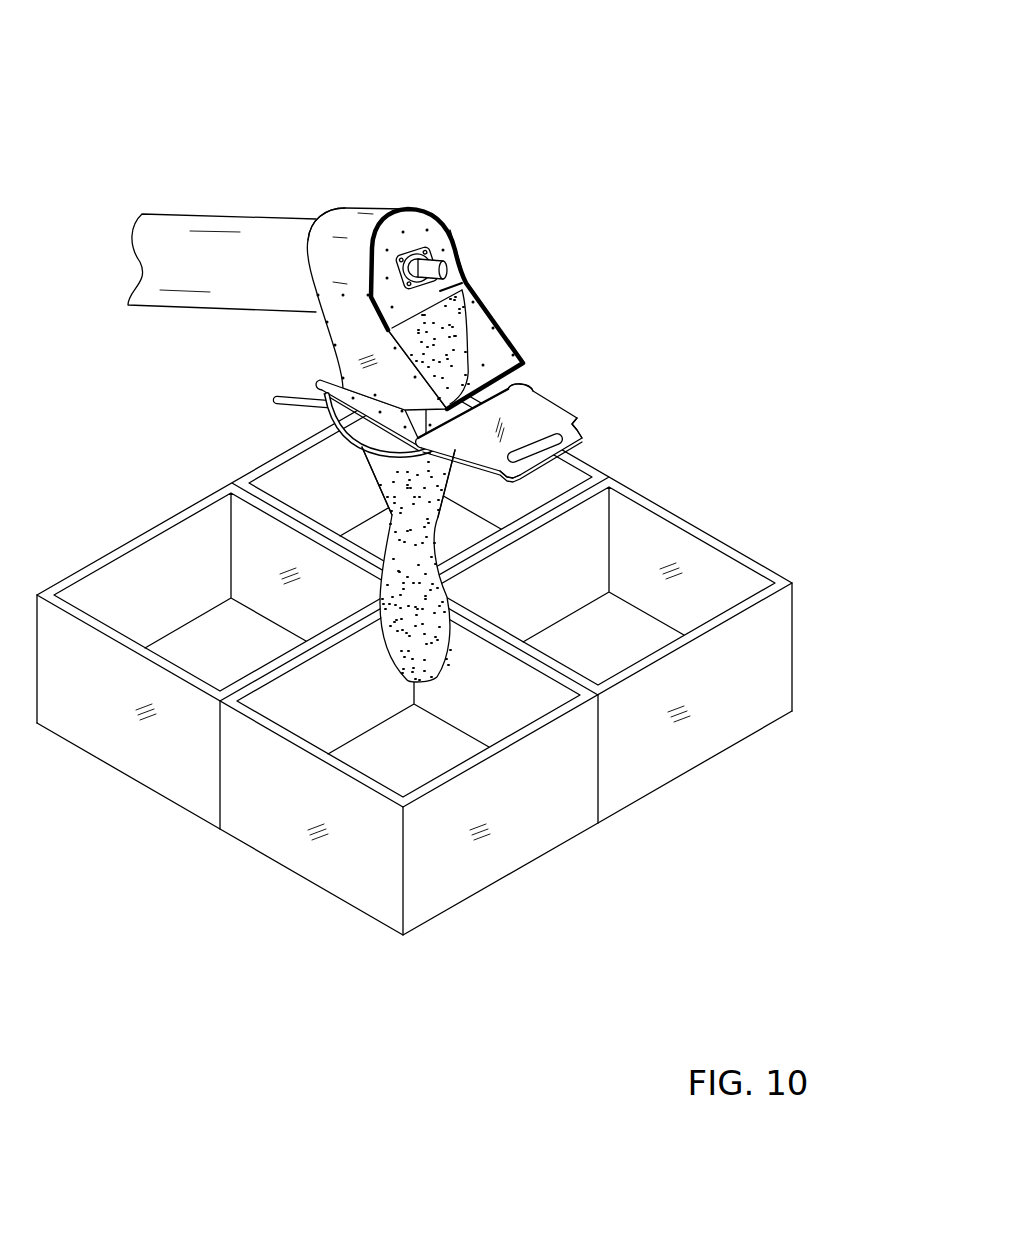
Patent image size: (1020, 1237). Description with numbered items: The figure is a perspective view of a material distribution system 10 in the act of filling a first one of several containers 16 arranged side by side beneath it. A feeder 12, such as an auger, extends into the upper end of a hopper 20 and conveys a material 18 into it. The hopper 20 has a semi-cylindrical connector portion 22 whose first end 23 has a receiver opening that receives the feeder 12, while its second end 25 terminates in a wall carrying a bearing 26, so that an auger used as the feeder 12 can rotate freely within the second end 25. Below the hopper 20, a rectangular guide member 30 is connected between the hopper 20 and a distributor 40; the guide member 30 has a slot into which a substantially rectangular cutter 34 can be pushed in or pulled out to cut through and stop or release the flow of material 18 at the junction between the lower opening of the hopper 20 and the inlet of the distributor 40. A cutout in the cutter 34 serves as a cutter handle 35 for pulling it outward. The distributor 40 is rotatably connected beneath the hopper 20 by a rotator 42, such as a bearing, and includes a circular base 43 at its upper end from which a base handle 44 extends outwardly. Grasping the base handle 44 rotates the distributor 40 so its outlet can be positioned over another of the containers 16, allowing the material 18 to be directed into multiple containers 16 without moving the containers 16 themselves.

The material distribution system 10 is at (434, 489).
The feeder 12 is at (212, 215).
The containers 16 is at (143, 760).
The material 18 is at (383, 660).
The hopper 20 is at (396, 263).
The connector portion 22 is at (423, 212).
The first end 23 is at (307, 194).
The second end 25 is at (466, 284).
The bearing 26 is at (432, 254).
The guide member 30 is at (557, 395).
The cutter 34 is at (567, 410).
The cutter handle 35 is at (578, 472).
The distributor 40 is at (363, 467).
The rotator 42 is at (338, 378).
The base 43 is at (333, 457).
The base handle 44 is at (293, 393).